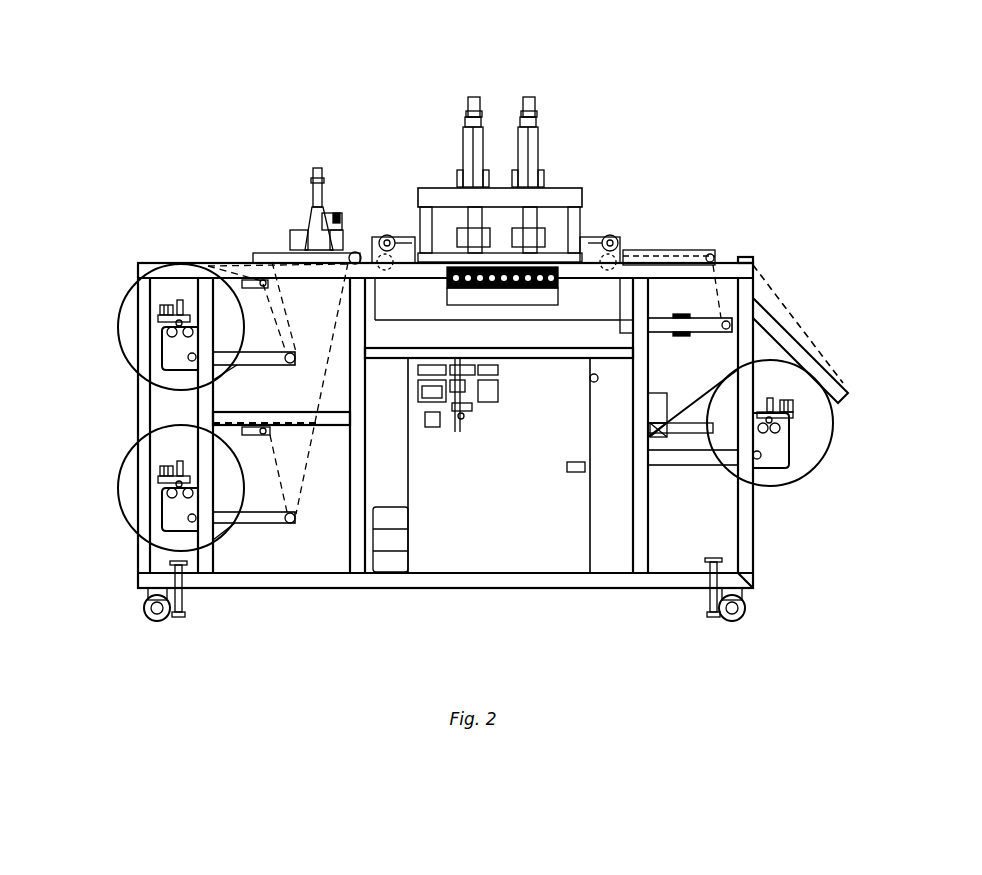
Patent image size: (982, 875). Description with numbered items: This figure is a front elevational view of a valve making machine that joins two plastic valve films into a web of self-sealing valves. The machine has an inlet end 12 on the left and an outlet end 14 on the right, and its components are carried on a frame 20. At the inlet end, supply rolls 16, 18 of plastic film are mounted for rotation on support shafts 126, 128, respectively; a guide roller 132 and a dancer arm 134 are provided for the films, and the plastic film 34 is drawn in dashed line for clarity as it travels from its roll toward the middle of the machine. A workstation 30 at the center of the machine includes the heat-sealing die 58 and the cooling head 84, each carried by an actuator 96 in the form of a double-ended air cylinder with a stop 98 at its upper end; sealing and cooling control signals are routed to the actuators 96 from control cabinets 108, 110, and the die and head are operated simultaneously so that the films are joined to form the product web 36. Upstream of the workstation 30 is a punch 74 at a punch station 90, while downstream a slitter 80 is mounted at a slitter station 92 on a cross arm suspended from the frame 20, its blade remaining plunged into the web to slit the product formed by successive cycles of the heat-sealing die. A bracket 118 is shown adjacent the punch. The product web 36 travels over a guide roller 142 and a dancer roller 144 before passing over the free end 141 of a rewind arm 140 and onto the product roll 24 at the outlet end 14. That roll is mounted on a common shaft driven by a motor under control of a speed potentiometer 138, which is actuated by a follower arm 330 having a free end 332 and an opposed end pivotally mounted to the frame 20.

The inlet end 12 is at (137, 570).
The outlet end 14 is at (753, 537).
The supply roll 16 is at (135, 302).
The supply roll 18 is at (138, 462).
The frame 20 is at (212, 590).
The product roll 24 is at (813, 453).
The workstation 30 is at (427, 143).
The plastic film 34 is at (308, 475).
The product web 36 is at (290, 525).
The heat-sealing die 58 is at (460, 238).
The punch 74 is at (313, 182).
The slitter 80 is at (645, 227).
The cooling head 84 is at (546, 238).
The punch station 90 is at (317, 160).
The slitter station 92 is at (627, 238).
The actuator 96 is at (468, 150).
The stop 98 is at (467, 105).
The control cabinet 108 is at (573, 523).
The control cabinet 110 is at (593, 308).
The bracket 118 is at (326, 212).
The support shaft 126 is at (162, 327).
The support shaft 128 is at (162, 488).
The guide roller 132 is at (255, 436).
The dancer arm 134 is at (288, 365).
The speed potentiometer 138 is at (670, 452).
The rewind arm 140 is at (770, 323).
The free end 141 is at (842, 383).
The guide roller 142 is at (703, 258).
The dancer roller 144 is at (723, 322).
The follower arm 330 is at (693, 393).
The free end 332 is at (720, 372).